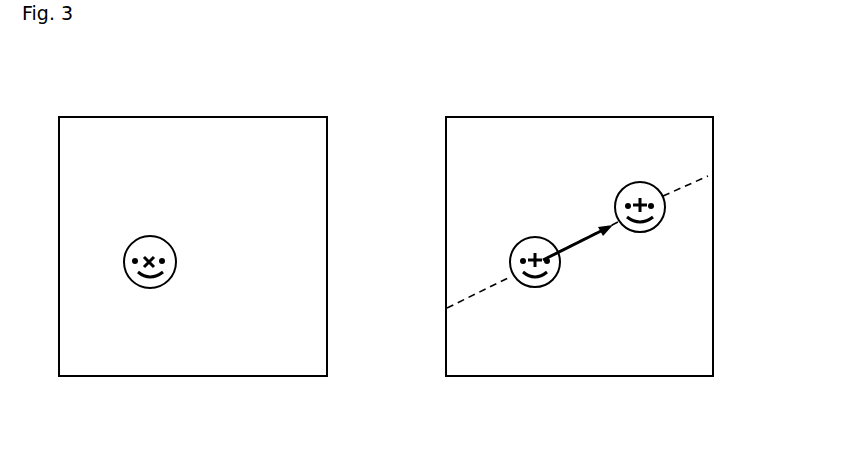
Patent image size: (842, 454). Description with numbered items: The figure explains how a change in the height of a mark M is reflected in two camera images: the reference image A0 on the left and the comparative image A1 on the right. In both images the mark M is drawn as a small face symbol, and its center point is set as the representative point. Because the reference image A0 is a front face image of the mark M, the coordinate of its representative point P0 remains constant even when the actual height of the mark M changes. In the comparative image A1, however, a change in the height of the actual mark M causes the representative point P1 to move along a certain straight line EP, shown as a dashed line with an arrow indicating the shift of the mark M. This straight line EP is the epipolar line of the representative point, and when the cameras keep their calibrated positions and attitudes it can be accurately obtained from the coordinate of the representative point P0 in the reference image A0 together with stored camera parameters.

The reference image A0 is at (267, 116).
The comparative image A1 is at (650, 116).
The representative point P0 is at (155, 284).
The representative point P1 is at (540, 284).
The mark M is at (170, 279).
The epipolar line EP is at (685, 188).